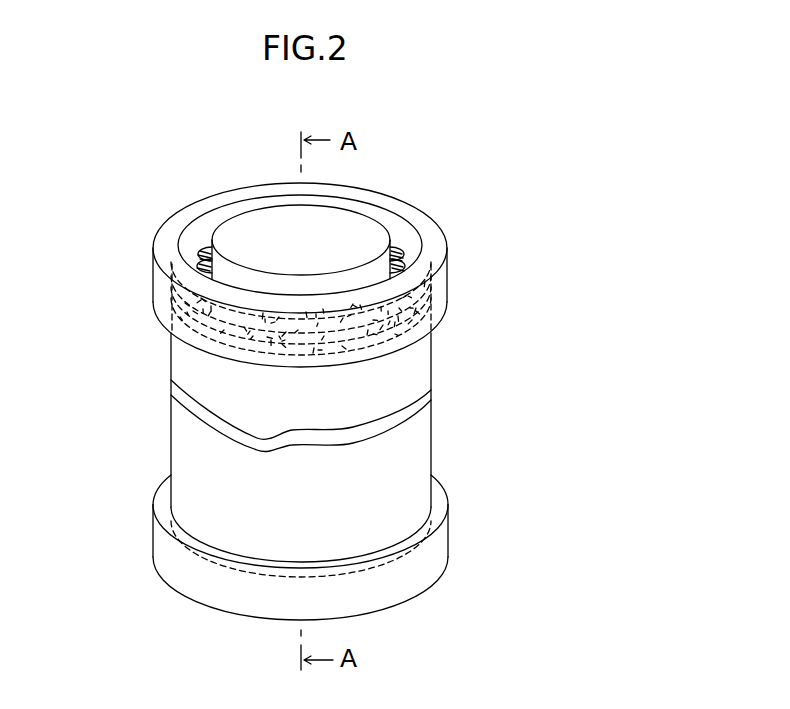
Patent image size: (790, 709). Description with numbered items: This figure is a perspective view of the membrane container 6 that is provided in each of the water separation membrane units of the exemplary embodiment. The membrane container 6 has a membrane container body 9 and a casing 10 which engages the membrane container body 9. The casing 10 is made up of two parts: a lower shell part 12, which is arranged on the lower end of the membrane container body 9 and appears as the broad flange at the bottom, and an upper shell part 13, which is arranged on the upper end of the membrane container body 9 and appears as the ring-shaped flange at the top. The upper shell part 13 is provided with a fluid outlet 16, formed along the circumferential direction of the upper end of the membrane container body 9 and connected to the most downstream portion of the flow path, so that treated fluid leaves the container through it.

The membrane container 6 is at (486, 236).
The membrane container body 9 is at (442, 359).
The casing 10 is at (161, 212).
The lower shell part 12 is at (440, 552).
The upper shell part 13 is at (415, 218).
The fluid outlet 16 is at (208, 225).